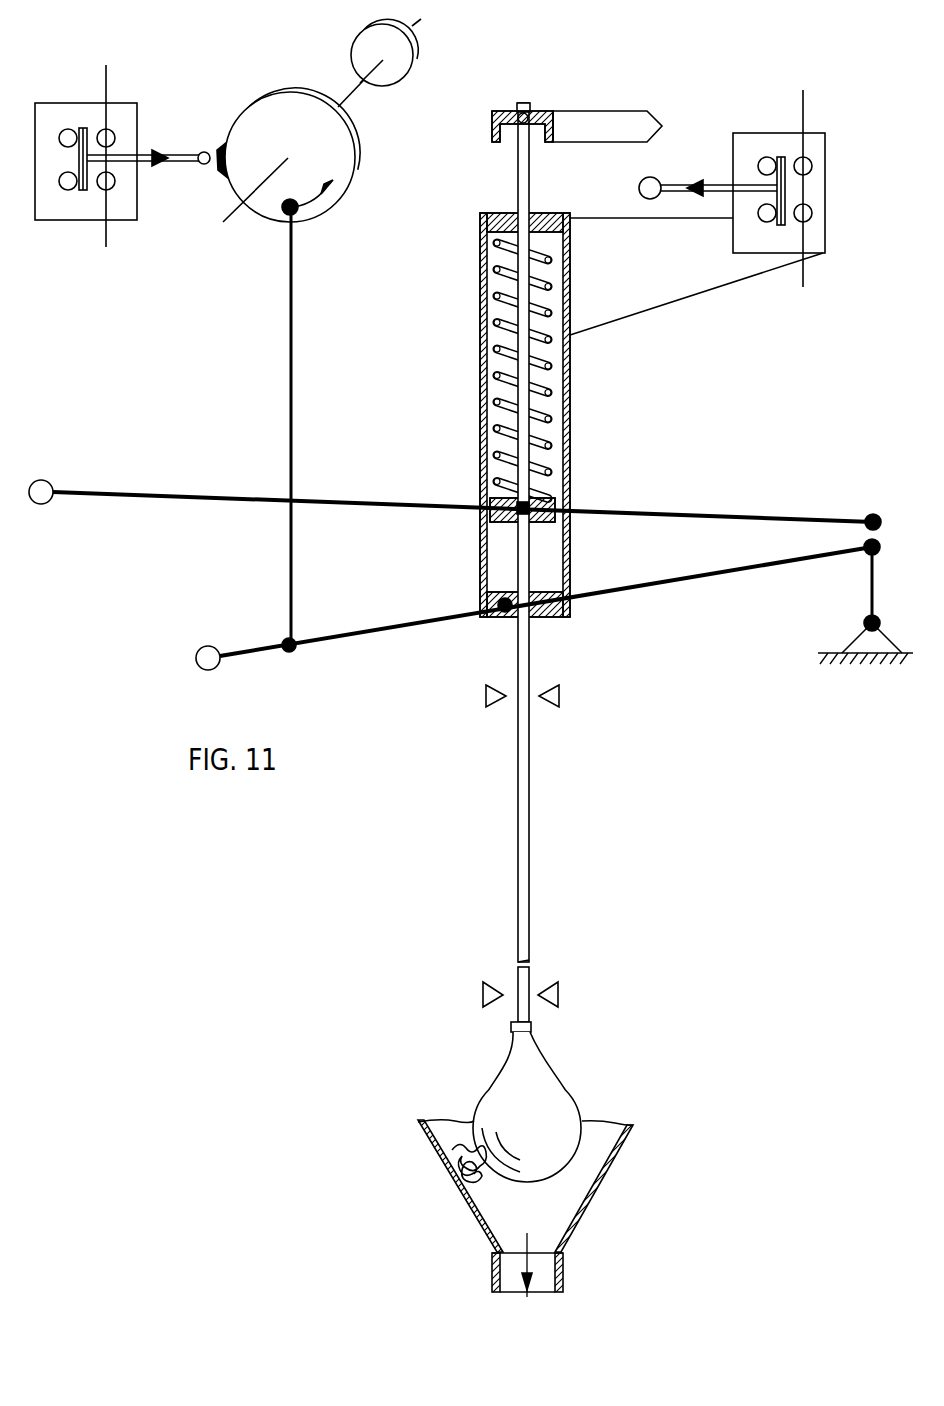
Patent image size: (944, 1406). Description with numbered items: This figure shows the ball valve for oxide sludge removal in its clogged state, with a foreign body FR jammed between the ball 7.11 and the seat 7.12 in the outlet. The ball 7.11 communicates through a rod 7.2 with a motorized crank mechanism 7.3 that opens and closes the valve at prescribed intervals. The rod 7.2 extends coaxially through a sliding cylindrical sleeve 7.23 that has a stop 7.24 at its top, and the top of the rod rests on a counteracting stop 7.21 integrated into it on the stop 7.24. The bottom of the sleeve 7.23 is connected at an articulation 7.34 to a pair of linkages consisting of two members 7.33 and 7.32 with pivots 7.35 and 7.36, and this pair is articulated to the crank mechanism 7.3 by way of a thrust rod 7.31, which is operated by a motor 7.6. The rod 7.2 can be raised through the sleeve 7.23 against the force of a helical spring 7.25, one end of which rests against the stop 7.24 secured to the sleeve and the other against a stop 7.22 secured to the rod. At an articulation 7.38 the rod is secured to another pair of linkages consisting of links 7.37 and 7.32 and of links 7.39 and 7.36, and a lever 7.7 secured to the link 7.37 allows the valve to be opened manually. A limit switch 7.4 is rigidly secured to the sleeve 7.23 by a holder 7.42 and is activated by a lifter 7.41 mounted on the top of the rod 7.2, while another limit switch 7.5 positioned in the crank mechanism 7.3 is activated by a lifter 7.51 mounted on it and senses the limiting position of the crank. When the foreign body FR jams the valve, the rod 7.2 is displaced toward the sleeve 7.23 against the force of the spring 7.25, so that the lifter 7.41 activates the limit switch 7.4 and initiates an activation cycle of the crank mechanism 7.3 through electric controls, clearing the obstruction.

The rod 7.2 is at (528, 830).
The counteracting stop 7.21 is at (503, 110).
The stop 7.22 is at (555, 500).
The sliding cylindrical sleeve 7.23 is at (570, 396).
The stop 7.24 is at (489, 213).
The helical spring 7.25 is at (497, 350).
The crank mechanism 7.3 is at (266, 218).
The thrust rod 7.31 is at (290, 380).
The linkage member 7.32 is at (868, 595).
The linkage member 7.33 is at (418, 624).
The articulation 7.34 is at (501, 615).
The pivot 7.35 is at (867, 555).
The pivot 7.36 is at (871, 636).
The link 7.37 is at (231, 500).
The articulation 7.38 is at (512, 520).
The link 7.39 is at (868, 514).
The limit switch 7.4 is at (757, 133).
The lifter 7.41 is at (600, 110).
The holder 7.42 is at (708, 284).
The limit switch 7.5 is at (76, 222).
The lifter 7.51 is at (222, 172).
The motor 7.6 is at (396, 80).
The lever 7.7 is at (41, 505).
The ball 7.11 is at (547, 1082).
The seat 7.12 is at (598, 1190).
The foreign body FR is at (452, 1170).